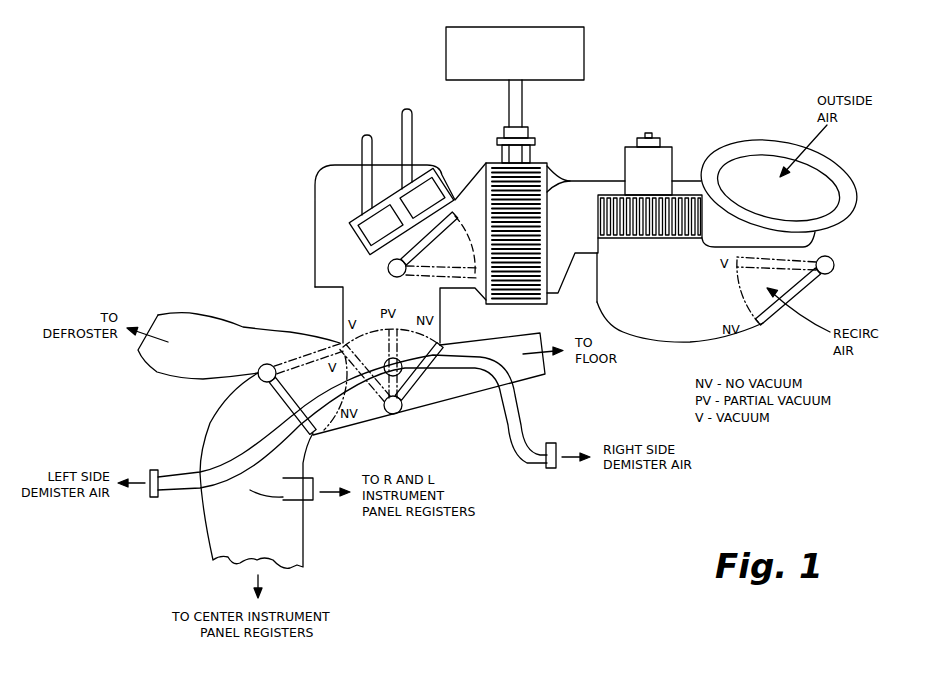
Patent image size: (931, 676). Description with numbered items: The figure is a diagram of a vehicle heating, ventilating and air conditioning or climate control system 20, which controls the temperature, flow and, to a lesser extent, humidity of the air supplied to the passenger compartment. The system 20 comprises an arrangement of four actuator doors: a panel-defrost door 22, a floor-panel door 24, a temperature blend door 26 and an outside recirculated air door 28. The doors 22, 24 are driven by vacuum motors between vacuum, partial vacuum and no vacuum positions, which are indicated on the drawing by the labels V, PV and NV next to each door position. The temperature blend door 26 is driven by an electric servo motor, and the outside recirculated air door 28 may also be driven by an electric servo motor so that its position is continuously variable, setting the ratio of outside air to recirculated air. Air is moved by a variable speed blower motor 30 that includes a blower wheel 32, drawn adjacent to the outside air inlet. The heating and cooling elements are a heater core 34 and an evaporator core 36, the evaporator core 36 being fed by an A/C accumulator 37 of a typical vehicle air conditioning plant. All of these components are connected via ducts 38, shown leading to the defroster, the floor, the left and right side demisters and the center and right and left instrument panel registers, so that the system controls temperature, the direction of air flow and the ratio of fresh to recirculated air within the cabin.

The climate control system 20 is at (740, 108).
The panel-defrost door 22 is at (288, 403).
The floor-panel door 24 is at (420, 380).
The temperature blend door 26 is at (403, 249).
The outside recirculated air door 28 is at (810, 288).
The variable speed blower motor 30 is at (625, 172).
The blower wheel 32 is at (687, 195).
The heater core 34 is at (352, 234).
The evaporator core 36 is at (566, 180).
The A/C accumulator 37 is at (446, 62).
The ducts 38 is at (653, 342).